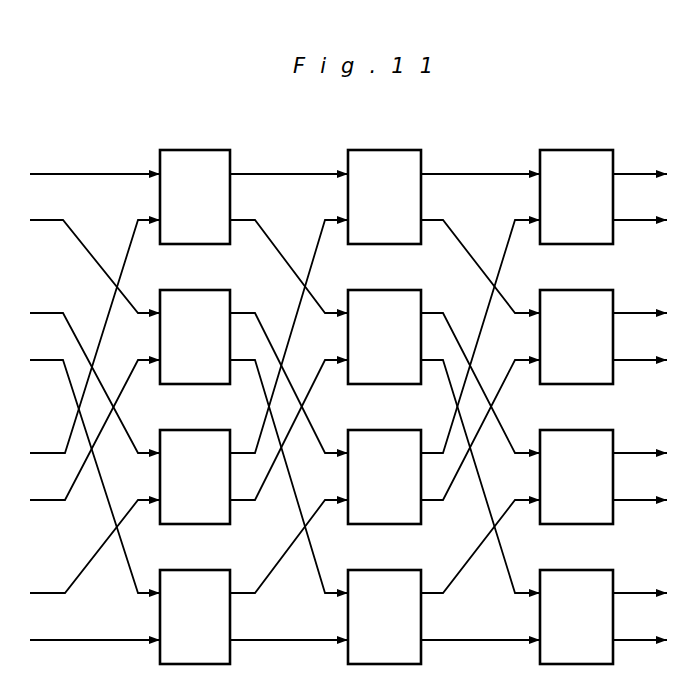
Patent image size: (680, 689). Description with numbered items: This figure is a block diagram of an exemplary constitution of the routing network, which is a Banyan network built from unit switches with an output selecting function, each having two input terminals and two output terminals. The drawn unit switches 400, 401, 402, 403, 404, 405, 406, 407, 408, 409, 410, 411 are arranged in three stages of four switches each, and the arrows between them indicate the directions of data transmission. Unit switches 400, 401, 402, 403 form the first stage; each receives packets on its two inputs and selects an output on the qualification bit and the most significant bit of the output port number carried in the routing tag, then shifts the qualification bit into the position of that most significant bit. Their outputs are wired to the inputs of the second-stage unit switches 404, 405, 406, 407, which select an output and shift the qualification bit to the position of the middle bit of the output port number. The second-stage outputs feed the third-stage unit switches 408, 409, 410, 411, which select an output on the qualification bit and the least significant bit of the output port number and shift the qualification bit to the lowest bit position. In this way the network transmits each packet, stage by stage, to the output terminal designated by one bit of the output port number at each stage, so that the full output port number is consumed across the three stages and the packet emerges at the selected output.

The unit switch with an output selecting function 400 is at (193, 150).
The unit switch with an output selecting function 401 is at (177, 290).
The unit switch with an output selecting function 402 is at (178, 430).
The unit switch with an output selecting function 403 is at (176, 570).
The unit switch with an output selecting function 404 is at (387, 150).
The unit switch with an output selecting function 405 is at (372, 290).
The unit switch with an output selecting function 406 is at (373, 430).
The unit switch with an output selecting function 407 is at (371, 570).
The unit switch with an output selecting function 408 is at (579, 150).
The unit switch with an output selecting function 409 is at (560, 290).
The unit switch with an output selecting function 410 is at (559, 430).
The unit switch with an output selecting function 411 is at (559, 570).